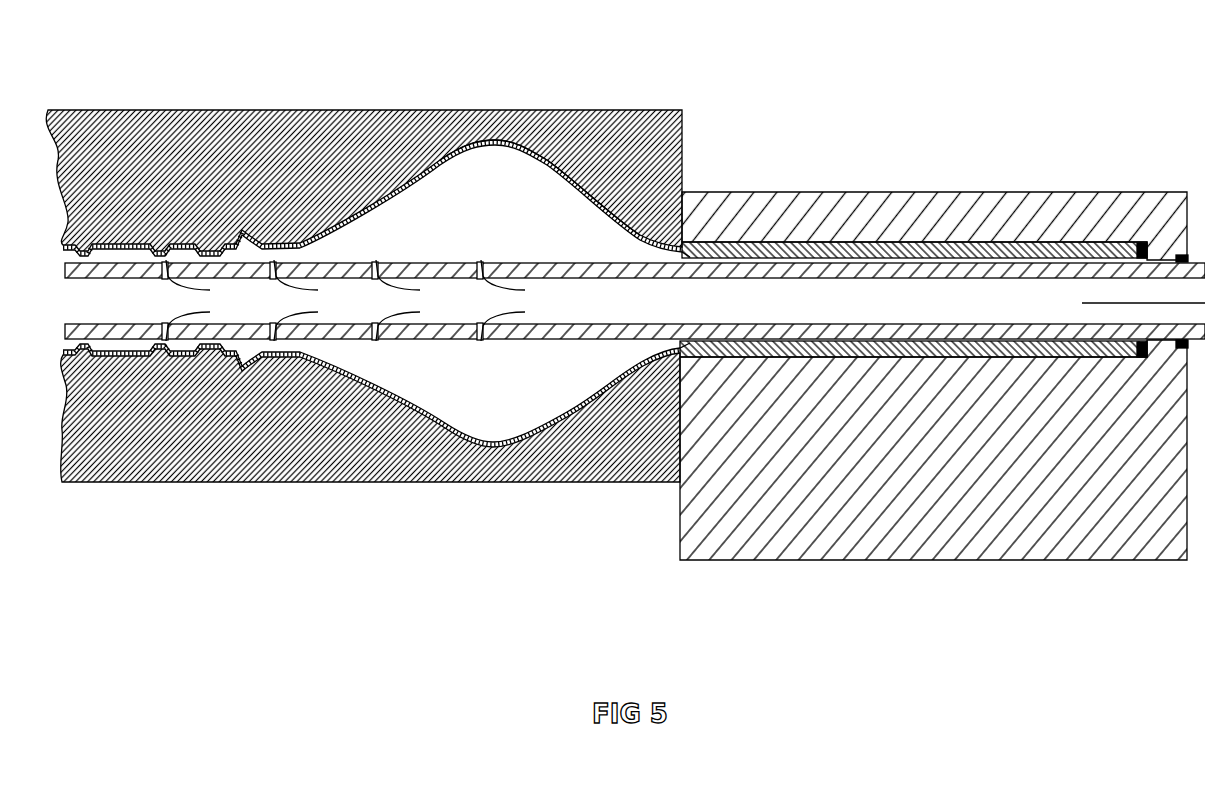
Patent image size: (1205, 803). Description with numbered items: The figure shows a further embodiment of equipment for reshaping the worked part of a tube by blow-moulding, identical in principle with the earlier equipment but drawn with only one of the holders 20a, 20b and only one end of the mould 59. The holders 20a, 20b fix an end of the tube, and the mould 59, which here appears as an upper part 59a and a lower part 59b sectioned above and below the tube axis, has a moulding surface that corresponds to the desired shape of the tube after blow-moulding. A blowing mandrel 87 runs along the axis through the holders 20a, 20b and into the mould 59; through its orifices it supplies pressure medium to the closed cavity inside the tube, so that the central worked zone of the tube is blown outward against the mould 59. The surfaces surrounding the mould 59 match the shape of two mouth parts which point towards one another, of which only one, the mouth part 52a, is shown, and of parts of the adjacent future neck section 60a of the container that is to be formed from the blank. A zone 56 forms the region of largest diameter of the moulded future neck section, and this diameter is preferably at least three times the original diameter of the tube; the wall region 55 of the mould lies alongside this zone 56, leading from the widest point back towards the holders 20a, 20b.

The mould 59 is at (368, 296).
The upper die half 59a is at (368, 137).
The lower die half 59b is at (292, 452).
The mouth part 52a is at (185, 245).
The future neck section 60a is at (367, 212).
The zone with the largest diameter 56 is at (495, 140).
The die cavity wall 55 is at (560, 170).
The blowing mandrel 87 is at (867, 268).
The holder 20a is at (982, 210).
The holder 20b is at (993, 533).